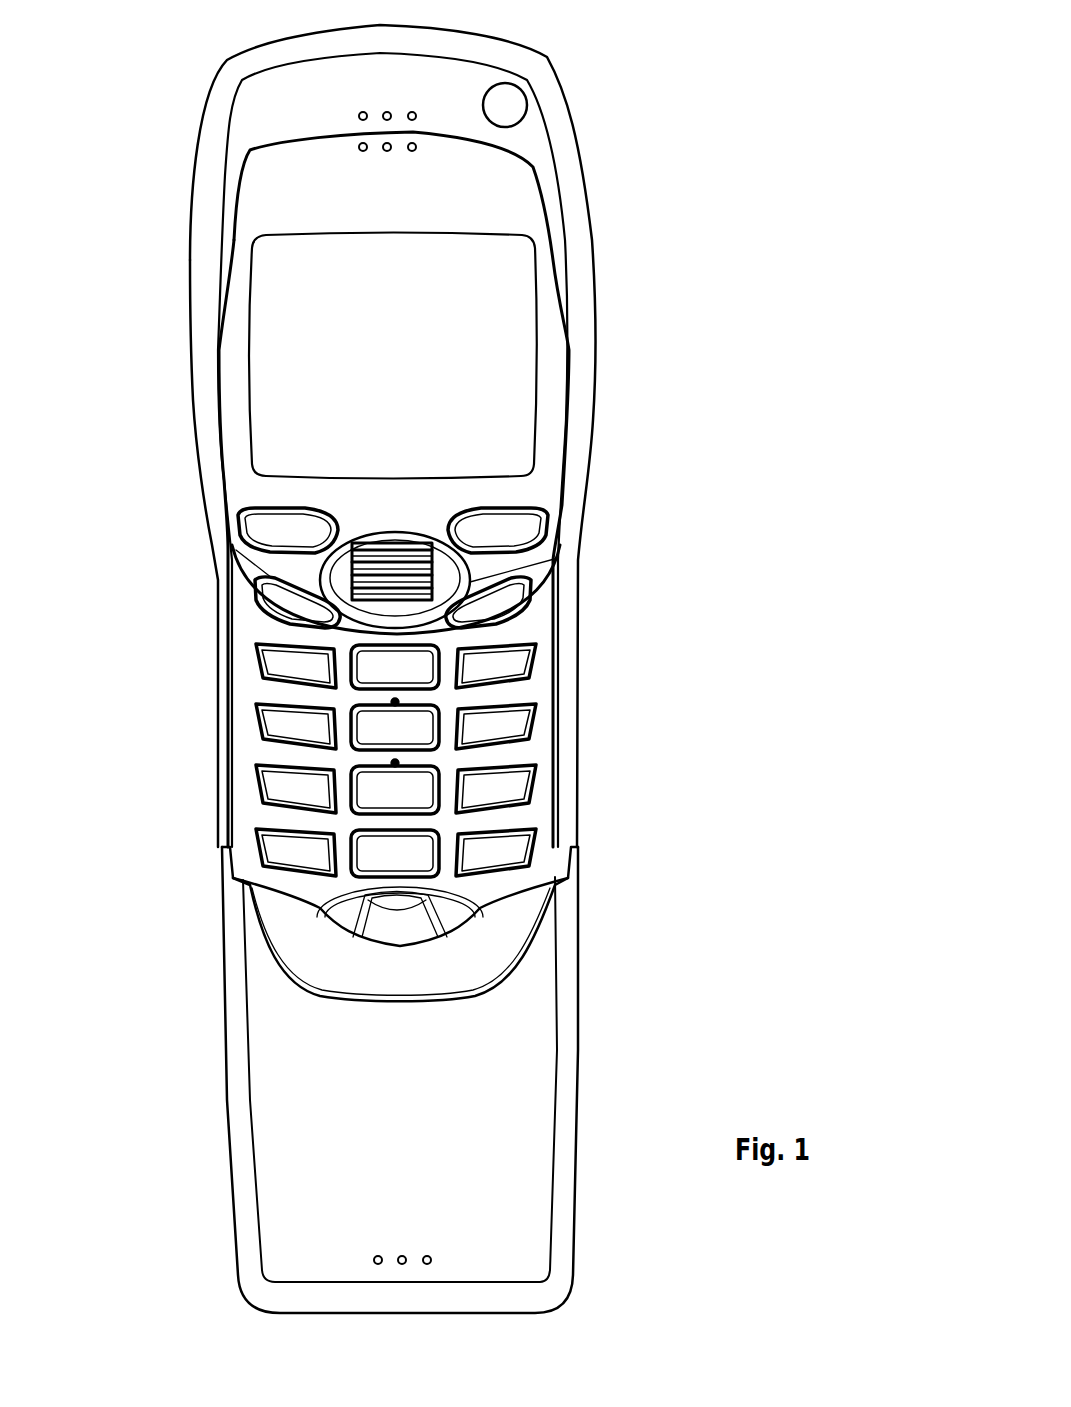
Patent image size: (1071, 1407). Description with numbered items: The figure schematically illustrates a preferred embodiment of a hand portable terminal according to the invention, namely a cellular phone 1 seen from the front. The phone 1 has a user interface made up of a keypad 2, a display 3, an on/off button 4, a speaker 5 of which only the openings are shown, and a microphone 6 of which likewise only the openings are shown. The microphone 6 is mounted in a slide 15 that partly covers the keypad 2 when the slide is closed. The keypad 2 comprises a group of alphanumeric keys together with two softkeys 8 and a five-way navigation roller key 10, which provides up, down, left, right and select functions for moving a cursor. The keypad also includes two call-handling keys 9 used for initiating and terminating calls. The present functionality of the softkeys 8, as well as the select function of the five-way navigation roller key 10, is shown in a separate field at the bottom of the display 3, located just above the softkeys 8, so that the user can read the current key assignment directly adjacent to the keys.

The cellular phone 1 is at (628, 226).
The keypad 2 is at (520, 715).
The display 3 is at (485, 328).
The on/off button 4 is at (507, 104).
The speaker 5 is at (447, 130).
The microphone 6 is at (418, 1250).
The softkeys 8 is at (328, 527).
The call-handling keys 9 is at (283, 608).
The five-way navigation roller key 10 is at (440, 577).
The slide 15 is at (442, 1018).